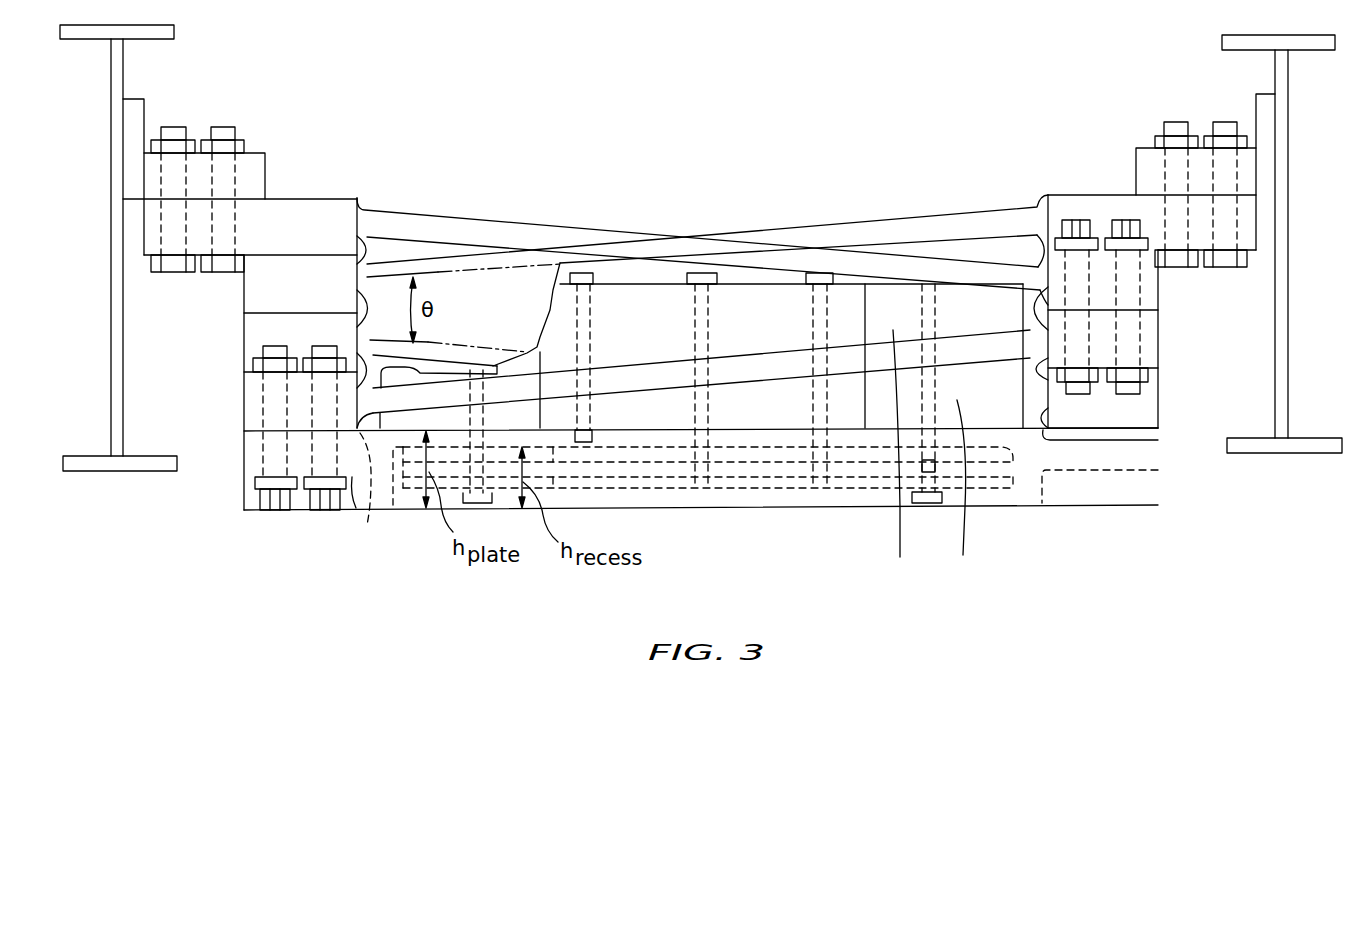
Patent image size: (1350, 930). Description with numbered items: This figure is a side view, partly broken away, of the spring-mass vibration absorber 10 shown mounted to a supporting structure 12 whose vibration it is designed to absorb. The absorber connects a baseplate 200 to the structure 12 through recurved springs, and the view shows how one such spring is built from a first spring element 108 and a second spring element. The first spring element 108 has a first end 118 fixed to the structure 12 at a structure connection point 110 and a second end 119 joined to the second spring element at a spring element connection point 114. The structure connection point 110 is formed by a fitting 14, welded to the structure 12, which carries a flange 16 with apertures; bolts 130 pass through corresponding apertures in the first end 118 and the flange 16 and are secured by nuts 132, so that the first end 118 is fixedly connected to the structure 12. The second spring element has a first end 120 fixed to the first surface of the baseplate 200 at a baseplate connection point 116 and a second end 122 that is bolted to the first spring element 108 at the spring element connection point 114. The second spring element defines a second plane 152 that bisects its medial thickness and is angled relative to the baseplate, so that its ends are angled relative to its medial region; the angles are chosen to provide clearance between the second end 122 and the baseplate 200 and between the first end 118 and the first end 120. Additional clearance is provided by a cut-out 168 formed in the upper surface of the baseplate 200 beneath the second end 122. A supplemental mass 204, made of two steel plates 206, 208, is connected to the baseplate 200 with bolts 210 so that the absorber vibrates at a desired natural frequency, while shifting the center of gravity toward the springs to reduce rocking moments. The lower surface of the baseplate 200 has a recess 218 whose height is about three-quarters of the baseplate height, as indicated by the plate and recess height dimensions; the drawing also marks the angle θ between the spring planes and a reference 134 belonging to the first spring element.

The spring-mass vibration absorber 10 is at (596, 185).
The structure 12 is at (111, 312).
The fitting 14 is at (1256, 108).
The flange 16 is at (1136, 160).
The first spring element 108 is at (845, 222).
The structure connection point 110 is at (1212, 82).
The spring element connection point 114 is at (244, 313).
The baseplate connection point 116 is at (1160, 428).
The first end 118 is at (1060, 195).
The second end 119 is at (244, 285).
The first end 120 is at (1160, 397).
The second end 122 is at (244, 360).
The bolts 130 is at (1225, 268).
The nuts 132 is at (1185, 144).
The flexure strip 134 is at (440, 270).
The second plane 152 is at (480, 340).
The cut-out 168 is at (360, 494).
The baseplate 200 is at (1133, 508).
The supplemental mass 204 is at (931, 479).
The steel plate 206 is at (902, 457).
The steel plate 208 is at (965, 492).
The bolts 210 is at (692, 308).
The recess 218 is at (690, 485).